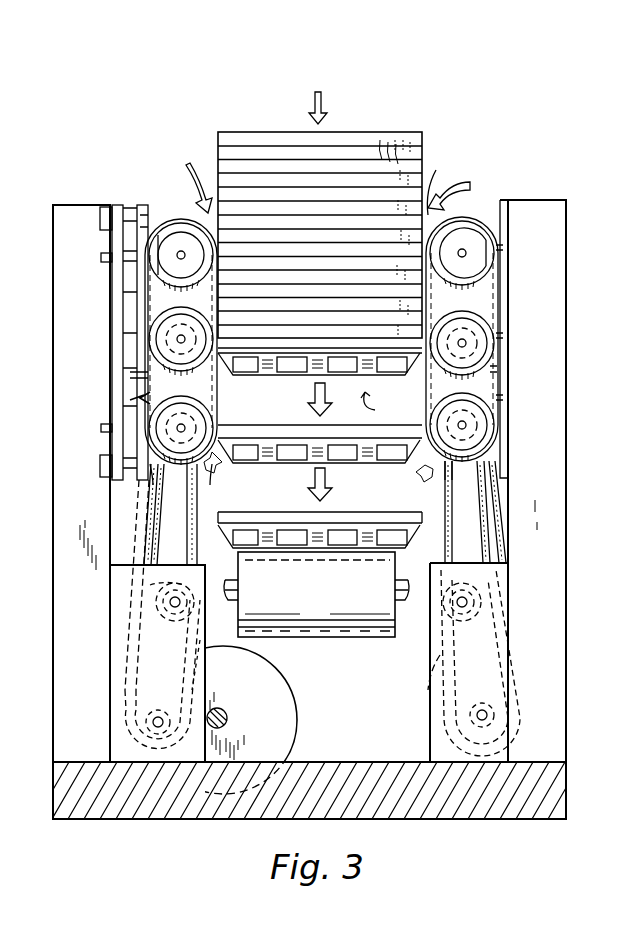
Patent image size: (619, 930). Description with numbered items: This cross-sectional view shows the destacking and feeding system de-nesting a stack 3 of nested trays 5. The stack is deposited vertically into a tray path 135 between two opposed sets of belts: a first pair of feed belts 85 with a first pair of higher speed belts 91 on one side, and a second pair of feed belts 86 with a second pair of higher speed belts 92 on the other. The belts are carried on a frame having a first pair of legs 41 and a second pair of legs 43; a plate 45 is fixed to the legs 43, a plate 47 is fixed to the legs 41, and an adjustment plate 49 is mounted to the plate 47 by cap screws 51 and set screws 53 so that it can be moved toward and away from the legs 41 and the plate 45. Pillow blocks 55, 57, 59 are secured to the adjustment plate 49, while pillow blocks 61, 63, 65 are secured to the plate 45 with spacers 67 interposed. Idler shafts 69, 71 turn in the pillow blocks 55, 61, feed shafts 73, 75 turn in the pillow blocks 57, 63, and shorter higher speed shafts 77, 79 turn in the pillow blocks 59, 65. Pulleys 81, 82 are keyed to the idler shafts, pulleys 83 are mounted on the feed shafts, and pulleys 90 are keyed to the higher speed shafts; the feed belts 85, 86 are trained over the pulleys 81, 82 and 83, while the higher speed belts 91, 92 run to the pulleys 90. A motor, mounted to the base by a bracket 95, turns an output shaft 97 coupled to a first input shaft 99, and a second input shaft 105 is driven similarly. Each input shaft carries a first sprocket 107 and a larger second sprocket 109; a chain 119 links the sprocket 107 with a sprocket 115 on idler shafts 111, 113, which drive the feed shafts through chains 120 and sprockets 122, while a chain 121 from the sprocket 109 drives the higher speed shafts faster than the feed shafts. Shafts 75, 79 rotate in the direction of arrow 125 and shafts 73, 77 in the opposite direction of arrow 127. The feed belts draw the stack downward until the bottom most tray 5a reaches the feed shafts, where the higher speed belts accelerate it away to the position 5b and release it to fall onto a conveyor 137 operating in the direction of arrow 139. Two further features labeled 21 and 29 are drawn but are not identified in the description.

The stack 3 is at (444, 131).
The nested trays 5 is at (355, 125).
The bottom most tray 5a is at (352, 401).
The tray position 5b is at (385, 480).
The sheet edges 21 is at (382, 165).
The receiving tray 29 is at (322, 538).
The first pair of legs 41 is at (95, 565).
The second pair of legs 43 is at (600, 568).
The plate 45 is at (507, 381).
The plate 47 is at (128, 335).
The adjustment plate 49 is at (140, 300).
The cap screws 51 is at (102, 207).
The set screws 53 is at (102, 257).
The pillow blocks 55 is at (152, 212).
The pillow blocks 57 is at (143, 326).
The pillow blocks 59 is at (128, 400).
The pillow blocks 61 is at (482, 232).
The pillow blocks 63 is at (482, 322).
The pillow blocks 65 is at (482, 441).
The spacers 67 is at (504, 247).
The idler shaft 69 is at (178, 258).
The idler shaft 71 is at (467, 257).
The feed shaft 73 is at (196, 322).
The feed shaft 75 is at (470, 340).
The higher speed shaft 77 is at (140, 445).
The higher speed shaft 79 is at (470, 426).
The pulley 81 is at (180, 222).
The pulley 82 is at (475, 218).
The pulleys 83 is at (238, 392).
The first pair of feed belts 85 is at (213, 240).
The second pair of feed belts 86 is at (448, 190).
The pulleys 90 is at (205, 421).
The first pair of higher speed belts 91 is at (207, 472).
The second pair of higher speed belts 92 is at (460, 486).
The bracket 95 is at (280, 728).
The motor output shaft 97 is at (222, 711).
The first input shaft 99 is at (150, 726).
The second input shaft 105 is at (482, 720).
The first sprocket 107 is at (196, 678).
The second sprocket 109 is at (155, 775).
The idler shaft 111 is at (168, 603).
The idler shaft 113 is at (468, 603).
The sprocket 115 is at (162, 666).
The chain 119 is at (128, 650).
The chain 120 is at (478, 522).
The chain 121 is at (148, 495).
The sprocket 122 is at (128, 375).
The arrow 125 is at (468, 212).
The arrow 127 is at (252, 480).
The tray path 135 is at (317, 90).
The conveyor 137 is at (352, 640).
The arrow 139 is at (340, 599).